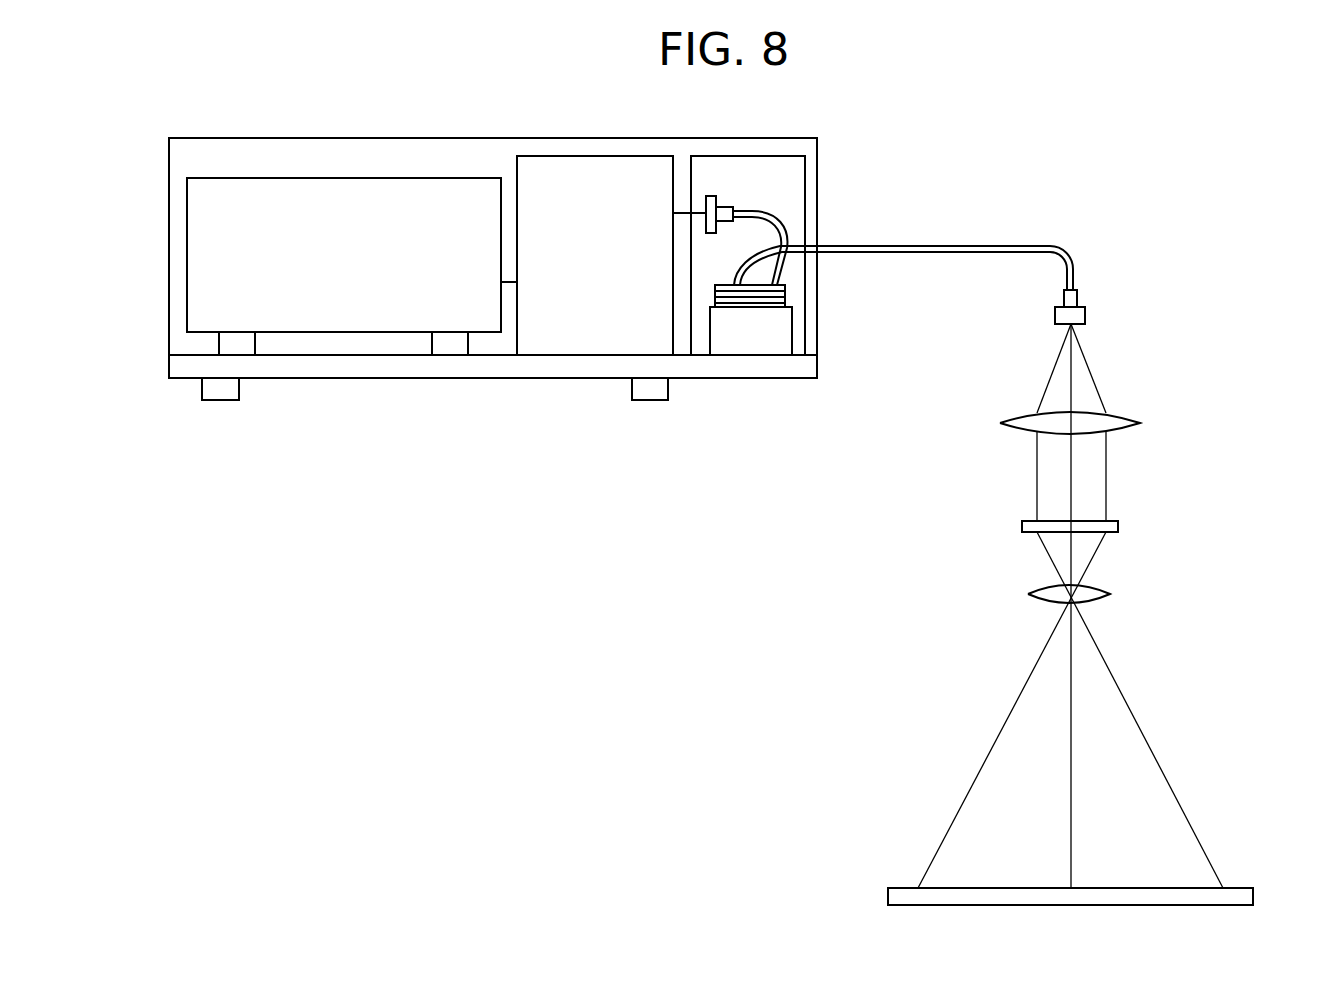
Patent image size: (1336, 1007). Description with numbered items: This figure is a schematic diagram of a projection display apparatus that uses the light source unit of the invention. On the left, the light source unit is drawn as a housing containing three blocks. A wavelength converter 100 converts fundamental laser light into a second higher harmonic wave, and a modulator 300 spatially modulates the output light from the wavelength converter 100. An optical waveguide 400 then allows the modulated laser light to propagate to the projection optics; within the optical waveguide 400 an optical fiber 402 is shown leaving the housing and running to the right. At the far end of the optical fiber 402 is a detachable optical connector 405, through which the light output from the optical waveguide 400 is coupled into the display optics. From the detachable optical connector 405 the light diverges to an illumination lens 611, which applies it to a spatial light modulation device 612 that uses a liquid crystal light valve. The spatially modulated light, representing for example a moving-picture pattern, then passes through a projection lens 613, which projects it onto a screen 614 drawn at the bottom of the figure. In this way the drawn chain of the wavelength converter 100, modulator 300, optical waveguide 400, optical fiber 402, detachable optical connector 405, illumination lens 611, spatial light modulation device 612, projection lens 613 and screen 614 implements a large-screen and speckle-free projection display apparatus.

The wavelength converter 100 is at (362, 267).
The modulator 300 is at (618, 260).
The optical waveguide 400 is at (770, 192).
The optical fiber 402 is at (933, 246).
The detachable optical connector 405 is at (1085, 316).
The illumination lens 611 is at (1140, 422).
The spatial light modulation device 612 is at (1118, 527).
The projection lens 613 is at (1110, 592).
The screen 614 is at (1253, 895).